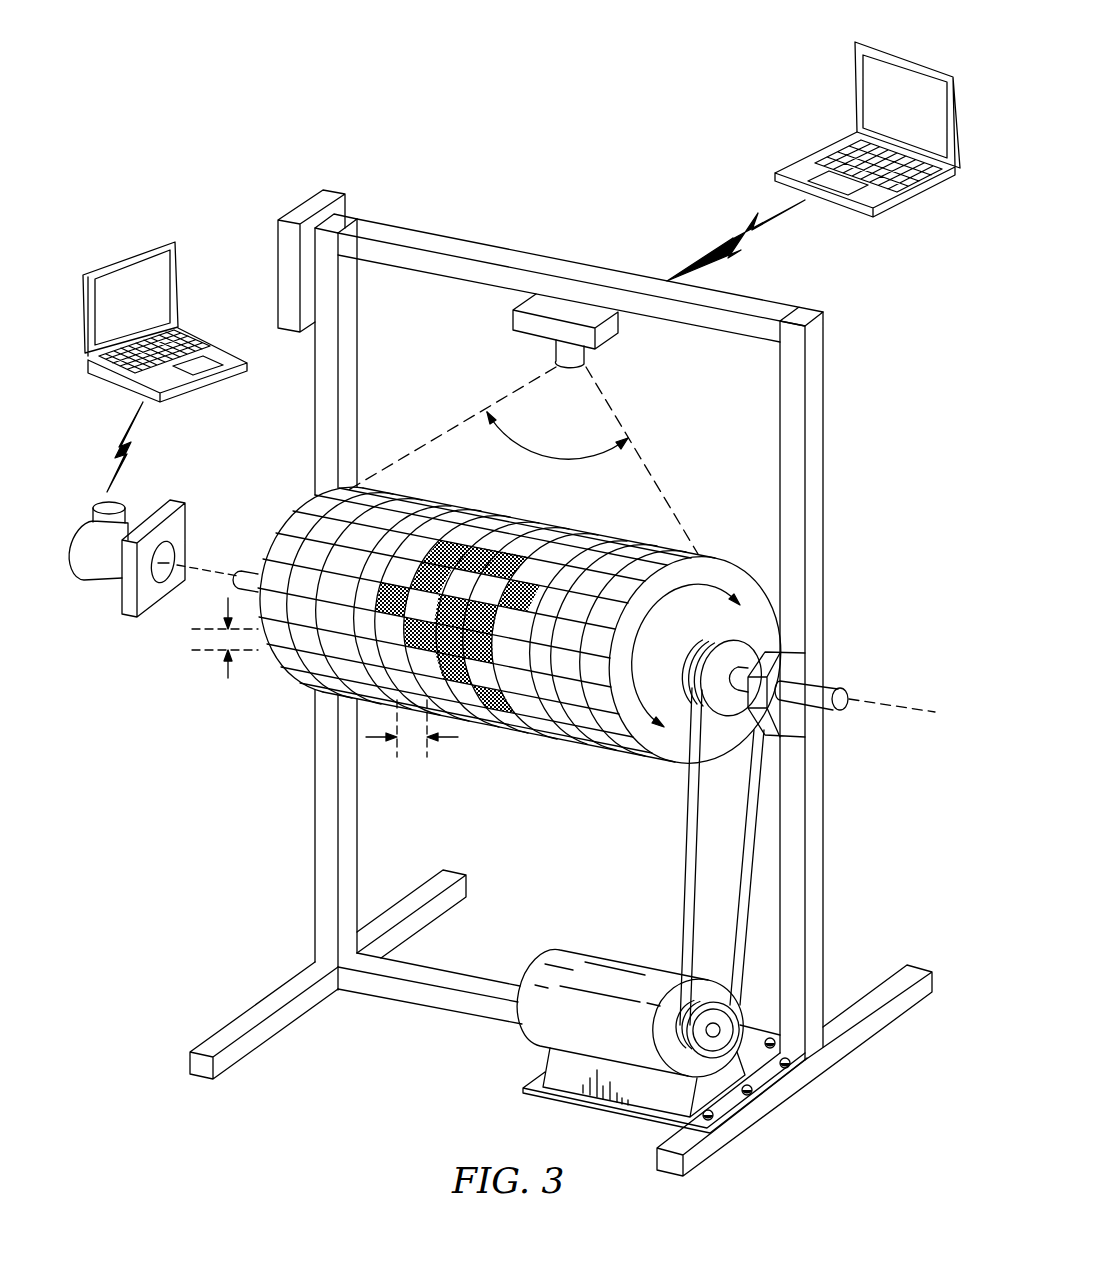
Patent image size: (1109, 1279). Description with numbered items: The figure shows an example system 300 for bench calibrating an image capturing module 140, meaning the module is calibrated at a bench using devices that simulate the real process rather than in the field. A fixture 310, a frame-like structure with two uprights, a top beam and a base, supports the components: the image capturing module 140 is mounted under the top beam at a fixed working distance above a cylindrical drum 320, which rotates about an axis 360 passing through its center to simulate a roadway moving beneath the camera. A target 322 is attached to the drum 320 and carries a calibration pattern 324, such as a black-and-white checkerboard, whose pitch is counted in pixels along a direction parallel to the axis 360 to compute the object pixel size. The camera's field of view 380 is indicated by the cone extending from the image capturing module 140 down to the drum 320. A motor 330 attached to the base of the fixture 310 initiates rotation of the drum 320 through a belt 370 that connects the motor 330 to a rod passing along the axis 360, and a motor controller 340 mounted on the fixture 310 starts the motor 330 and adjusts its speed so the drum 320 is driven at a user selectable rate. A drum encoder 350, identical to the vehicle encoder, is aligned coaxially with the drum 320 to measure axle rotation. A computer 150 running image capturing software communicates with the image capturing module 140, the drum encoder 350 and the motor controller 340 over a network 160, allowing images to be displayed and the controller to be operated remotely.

The system 300 is at (276, 42).
The fixture 310 is at (819, 445).
The motor controller 340 is at (297, 196).
The computer 150 is at (852, 87).
The network 160 is at (117, 469).
The image capturing module 140 is at (608, 342).
The field of view 380 is at (516, 442).
The drum 320 is at (481, 646).
The target 322 is at (598, 743).
The calibration pattern 324 is at (351, 664).
The axis 360 is at (902, 703).
The drum encoder 350 is at (83, 582).
The belt 370 is at (686, 899).
The motor 330 is at (545, 1031).